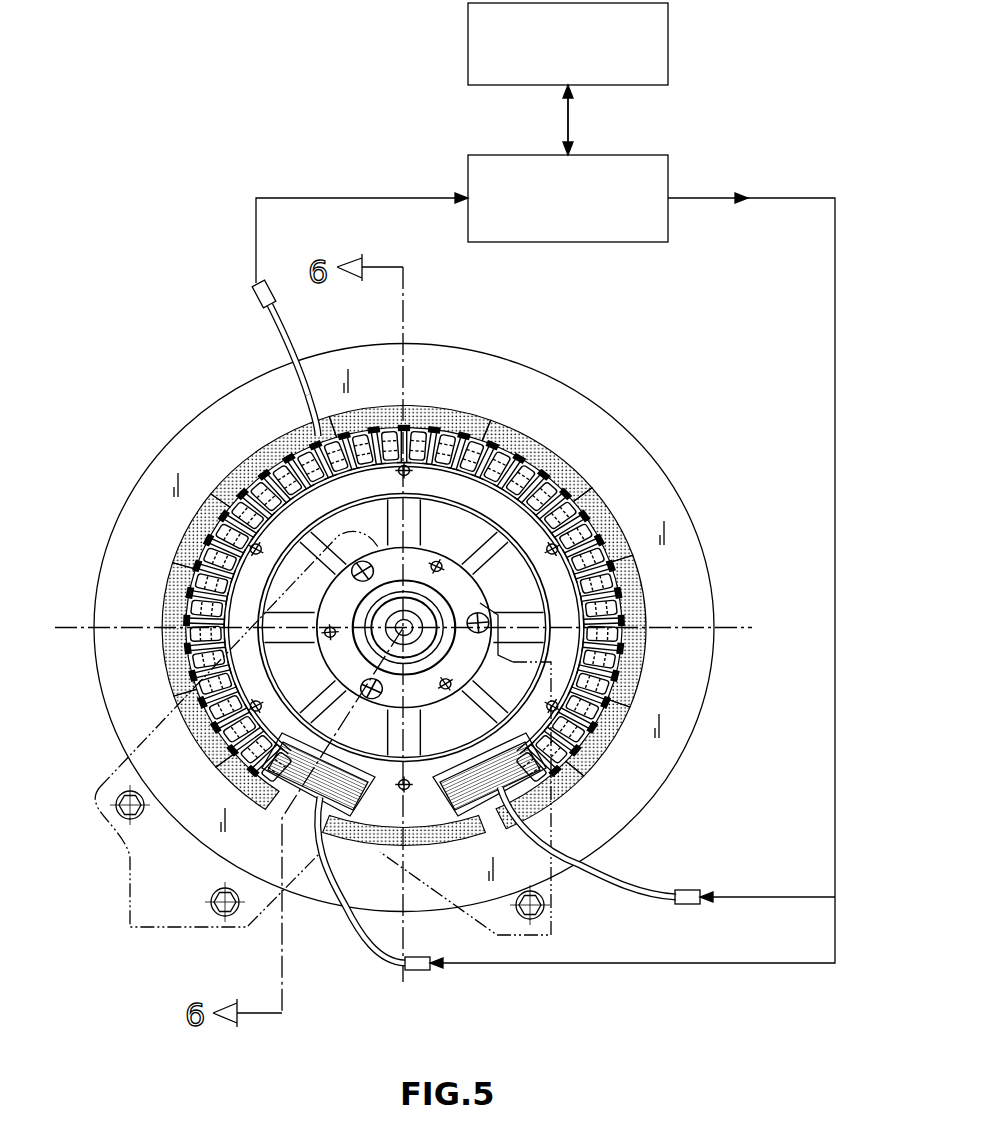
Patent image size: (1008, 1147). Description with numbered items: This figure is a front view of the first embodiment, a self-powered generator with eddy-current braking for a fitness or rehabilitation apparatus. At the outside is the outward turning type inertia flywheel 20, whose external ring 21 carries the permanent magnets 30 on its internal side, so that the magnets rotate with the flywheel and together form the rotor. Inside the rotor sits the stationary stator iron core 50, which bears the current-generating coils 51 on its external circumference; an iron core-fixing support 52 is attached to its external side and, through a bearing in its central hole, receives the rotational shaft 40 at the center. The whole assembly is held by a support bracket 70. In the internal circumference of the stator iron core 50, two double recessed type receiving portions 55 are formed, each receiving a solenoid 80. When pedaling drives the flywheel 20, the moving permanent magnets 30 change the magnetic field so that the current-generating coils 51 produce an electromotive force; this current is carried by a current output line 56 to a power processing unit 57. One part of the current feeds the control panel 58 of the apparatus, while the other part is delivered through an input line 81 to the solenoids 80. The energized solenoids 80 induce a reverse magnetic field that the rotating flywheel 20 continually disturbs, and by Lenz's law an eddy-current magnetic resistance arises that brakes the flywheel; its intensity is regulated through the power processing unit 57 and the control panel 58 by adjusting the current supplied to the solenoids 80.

The outward turning type inertia flywheel 20 is at (605, 385).
The external ring 21 is at (527, 363).
The permanent magnets 30 is at (593, 488).
The rotational shaft 40 is at (387, 613).
The stator iron core 50 is at (628, 646).
The current-generating coils 51 is at (625, 612).
The iron core-fixing support 52 is at (315, 432).
The double recessed type receiving portion 55 is at (595, 732).
The current output line 56 is at (260, 300).
The power processing unit 57 is at (668, 220).
The control panel 58 is at (668, 50).
The support bracket 70 is at (122, 886).
The solenoids 80 is at (555, 802).
The input line 81 is at (687, 905).